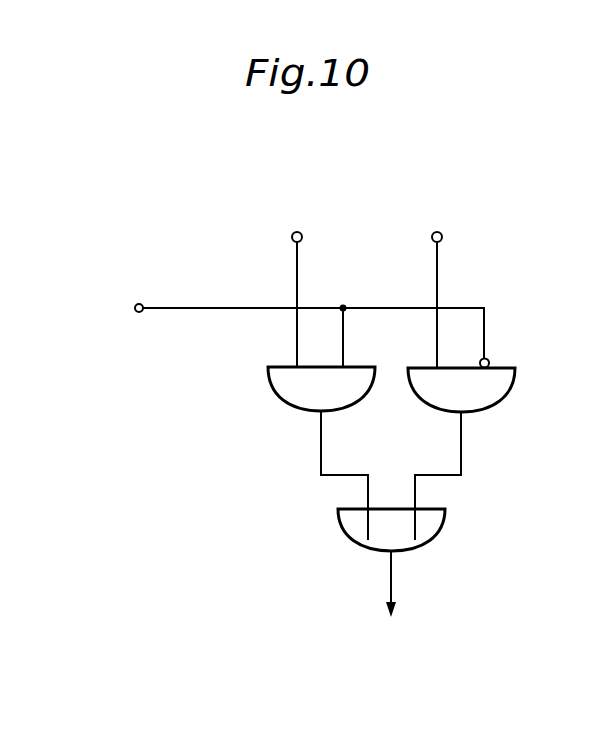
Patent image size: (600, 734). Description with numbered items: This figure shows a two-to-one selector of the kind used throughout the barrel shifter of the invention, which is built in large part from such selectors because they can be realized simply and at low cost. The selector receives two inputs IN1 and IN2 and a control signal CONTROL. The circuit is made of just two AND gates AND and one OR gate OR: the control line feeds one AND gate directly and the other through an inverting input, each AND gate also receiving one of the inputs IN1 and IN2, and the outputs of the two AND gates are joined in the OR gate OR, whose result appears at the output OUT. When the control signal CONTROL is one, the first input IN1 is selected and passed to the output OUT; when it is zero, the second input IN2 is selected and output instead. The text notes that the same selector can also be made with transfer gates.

The control signal CONTROL is at (259, 325).
The first input IN1 is at (293, 283).
The second input IN2 is at (439, 284).
The AND gates AND is at (391, 389).
The OR gate OR is at (399, 480).
The output OUT is at (392, 599).